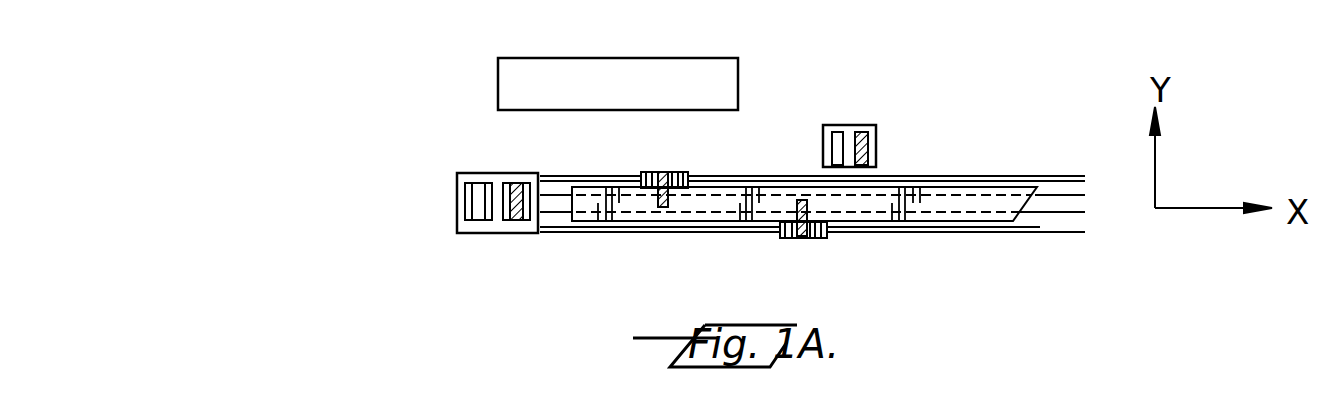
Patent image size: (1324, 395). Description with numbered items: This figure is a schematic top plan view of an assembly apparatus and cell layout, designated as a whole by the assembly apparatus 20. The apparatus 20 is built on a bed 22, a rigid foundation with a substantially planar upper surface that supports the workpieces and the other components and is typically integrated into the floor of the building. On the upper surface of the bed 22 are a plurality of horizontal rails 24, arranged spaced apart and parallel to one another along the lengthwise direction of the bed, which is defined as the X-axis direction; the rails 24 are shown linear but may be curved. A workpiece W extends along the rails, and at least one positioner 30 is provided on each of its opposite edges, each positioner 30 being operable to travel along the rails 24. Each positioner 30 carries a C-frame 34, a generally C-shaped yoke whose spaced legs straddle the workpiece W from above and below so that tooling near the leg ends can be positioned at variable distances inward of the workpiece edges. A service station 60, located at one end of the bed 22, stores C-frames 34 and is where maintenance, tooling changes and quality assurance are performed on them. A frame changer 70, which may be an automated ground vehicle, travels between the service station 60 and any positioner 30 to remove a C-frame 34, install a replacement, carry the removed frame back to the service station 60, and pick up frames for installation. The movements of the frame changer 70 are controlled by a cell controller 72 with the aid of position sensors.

The assembly apparatus 20 is at (770, 170).
The bed 22 is at (1063, 186).
The horizontal rails 24 is at (1047, 197).
The positioner 30 is at (690, 169).
The C-frame 34 is at (663, 168).
The service station 60 is at (480, 170).
The frame changer 70 is at (861, 124).
The cell controller 72 is at (612, 58).
The workpiece W is at (935, 240).